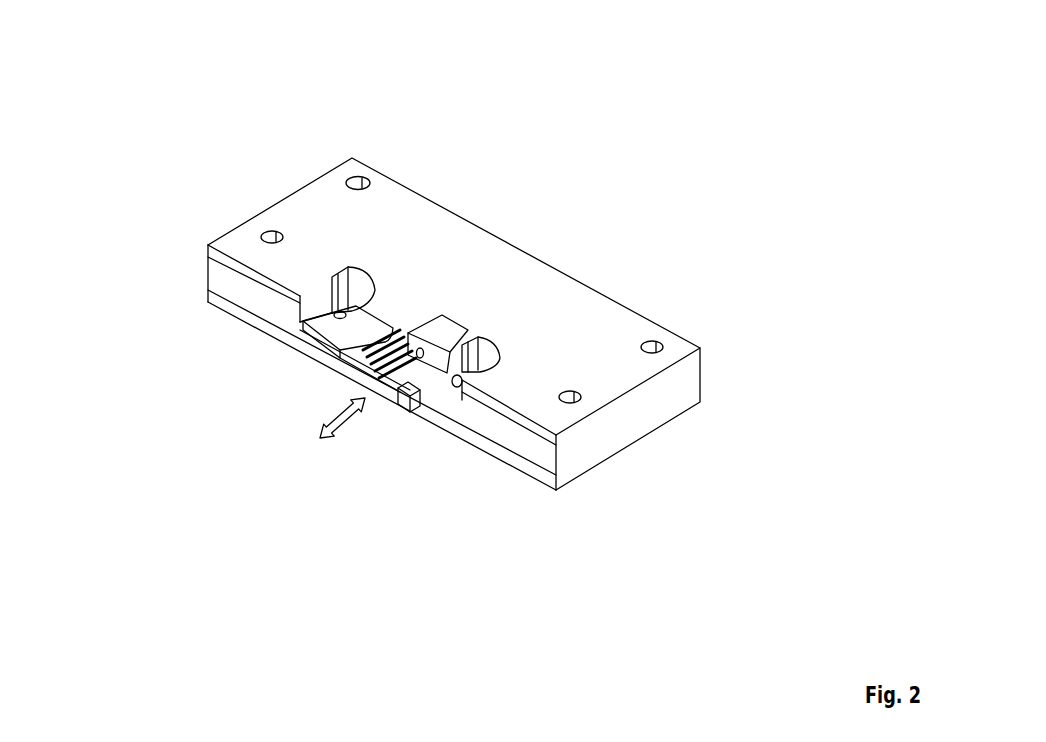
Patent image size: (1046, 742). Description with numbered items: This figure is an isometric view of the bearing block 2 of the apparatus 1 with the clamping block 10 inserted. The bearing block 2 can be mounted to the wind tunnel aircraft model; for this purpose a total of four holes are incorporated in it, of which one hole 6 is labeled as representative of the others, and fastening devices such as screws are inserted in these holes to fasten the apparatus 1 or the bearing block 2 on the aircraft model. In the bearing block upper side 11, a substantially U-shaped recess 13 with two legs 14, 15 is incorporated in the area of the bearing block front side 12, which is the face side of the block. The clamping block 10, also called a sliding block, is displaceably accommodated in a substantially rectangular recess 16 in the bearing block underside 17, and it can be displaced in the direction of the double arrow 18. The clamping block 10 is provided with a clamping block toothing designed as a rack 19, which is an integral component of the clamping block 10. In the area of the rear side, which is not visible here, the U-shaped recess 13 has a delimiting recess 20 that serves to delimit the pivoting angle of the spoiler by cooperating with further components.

The apparatus 1 is at (657, 92).
The bearing block 2 is at (603, 313).
The hole 6 is at (358, 180).
The clamping block 10 is at (360, 380).
The bearing block upper side 11 is at (380, 217).
The bearing block front side 12 is at (238, 295).
The U-shaped recess 13 is at (358, 337).
The leg 14 is at (328, 300).
The leg 15 is at (467, 373).
The rectangular recess 16 is at (412, 410).
The bearing block underside 17 is at (605, 467).
The direction of movement 18 is at (338, 428).
The rack 19 is at (397, 333).
The delimiting recess 20 is at (412, 343).